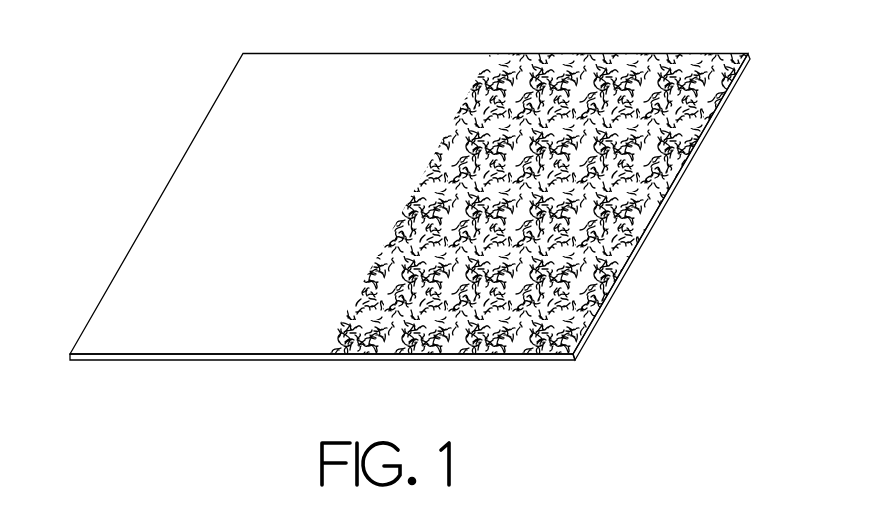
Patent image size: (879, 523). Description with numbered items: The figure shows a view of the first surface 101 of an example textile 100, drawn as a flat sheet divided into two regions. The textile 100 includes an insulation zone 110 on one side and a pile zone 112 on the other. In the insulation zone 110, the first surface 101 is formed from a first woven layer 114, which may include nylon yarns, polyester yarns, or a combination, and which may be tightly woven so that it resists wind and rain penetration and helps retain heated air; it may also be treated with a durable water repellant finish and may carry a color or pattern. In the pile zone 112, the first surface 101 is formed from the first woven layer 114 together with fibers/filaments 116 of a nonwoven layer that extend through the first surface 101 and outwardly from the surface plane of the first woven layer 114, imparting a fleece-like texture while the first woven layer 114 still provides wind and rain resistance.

The textile 100 is at (396, 209).
The first surface 101 is at (282, 78).
The insulation zone 110 is at (315, 372).
The pile zone 112 is at (568, 372).
The first woven layer 114 is at (293, 221).
The fibers/filaments of the nonwoven layer 116 is at (575, 72).